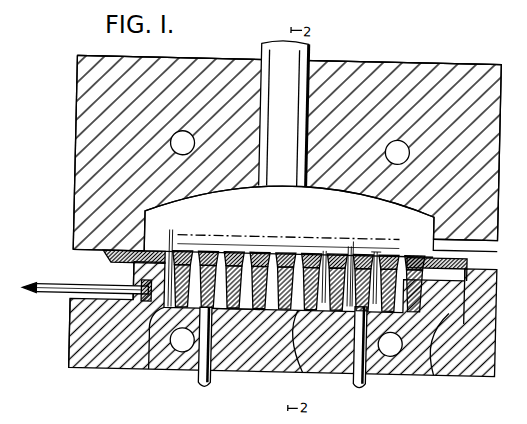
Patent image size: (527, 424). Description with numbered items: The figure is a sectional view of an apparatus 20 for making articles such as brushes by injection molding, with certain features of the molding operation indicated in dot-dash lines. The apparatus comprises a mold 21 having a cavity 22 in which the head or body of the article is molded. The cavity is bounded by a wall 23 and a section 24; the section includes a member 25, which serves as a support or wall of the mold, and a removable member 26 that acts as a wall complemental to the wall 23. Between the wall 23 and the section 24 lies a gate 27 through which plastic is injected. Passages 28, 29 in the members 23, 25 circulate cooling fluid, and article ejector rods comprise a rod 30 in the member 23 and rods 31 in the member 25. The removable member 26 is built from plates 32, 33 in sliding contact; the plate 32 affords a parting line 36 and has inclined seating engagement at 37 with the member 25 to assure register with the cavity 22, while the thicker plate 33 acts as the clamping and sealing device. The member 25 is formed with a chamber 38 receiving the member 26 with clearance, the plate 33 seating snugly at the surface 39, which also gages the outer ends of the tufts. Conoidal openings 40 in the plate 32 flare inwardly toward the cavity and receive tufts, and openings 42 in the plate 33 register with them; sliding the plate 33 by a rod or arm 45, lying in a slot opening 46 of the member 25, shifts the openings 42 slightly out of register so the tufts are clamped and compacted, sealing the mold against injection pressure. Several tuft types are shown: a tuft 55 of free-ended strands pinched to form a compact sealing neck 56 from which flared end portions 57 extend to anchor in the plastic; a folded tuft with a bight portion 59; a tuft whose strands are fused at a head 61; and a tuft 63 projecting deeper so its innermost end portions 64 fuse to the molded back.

The apparatus 20 is at (420, 58).
The mold 21 is at (462, 63).
The cavity 22 is at (321, 221).
The wall 23 is at (364, 73).
The section 24 is at (64, 330).
The member 25 is at (104, 376).
The member 26 is at (100, 262).
The gate 27 is at (477, 258).
The passage 28 is at (185, 157).
The passage 29 is at (187, 357).
The rod 30 is at (307, 49).
The rods 31 is at (212, 393).
The plate 32 is at (235, 254).
The plate 33 is at (262, 373).
The parting line 36 is at (148, 257).
The inclined seating engagement 37 is at (74, 255).
The chamber 38 is at (437, 369).
The surface 39 is at (308, 372).
The openings 40 is at (258, 254).
The openings 42 is at (395, 354).
The rod or arm 45 is at (62, 303).
The slot opening 46 is at (80, 282).
The tuft 55 is at (160, 375).
The sealing portion or neck 56 is at (186, 246).
The end portions 57 is at (174, 262).
The bight portion 59 is at (324, 254).
The head 61 is at (378, 251).
The tuft 63 is at (349, 254).
The innermost end portions 64 is at (354, 240).